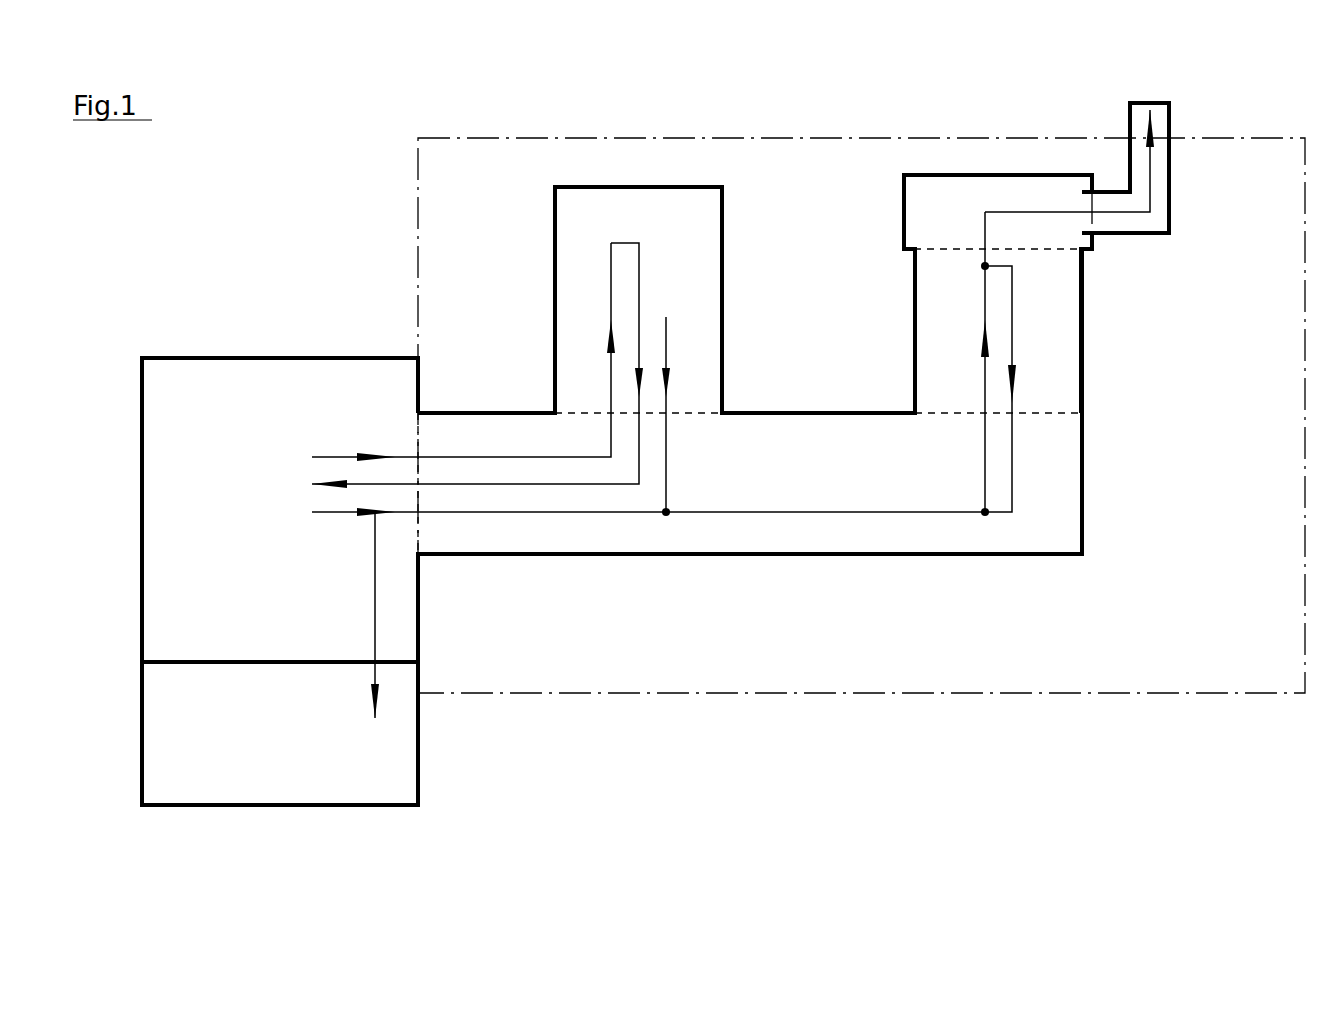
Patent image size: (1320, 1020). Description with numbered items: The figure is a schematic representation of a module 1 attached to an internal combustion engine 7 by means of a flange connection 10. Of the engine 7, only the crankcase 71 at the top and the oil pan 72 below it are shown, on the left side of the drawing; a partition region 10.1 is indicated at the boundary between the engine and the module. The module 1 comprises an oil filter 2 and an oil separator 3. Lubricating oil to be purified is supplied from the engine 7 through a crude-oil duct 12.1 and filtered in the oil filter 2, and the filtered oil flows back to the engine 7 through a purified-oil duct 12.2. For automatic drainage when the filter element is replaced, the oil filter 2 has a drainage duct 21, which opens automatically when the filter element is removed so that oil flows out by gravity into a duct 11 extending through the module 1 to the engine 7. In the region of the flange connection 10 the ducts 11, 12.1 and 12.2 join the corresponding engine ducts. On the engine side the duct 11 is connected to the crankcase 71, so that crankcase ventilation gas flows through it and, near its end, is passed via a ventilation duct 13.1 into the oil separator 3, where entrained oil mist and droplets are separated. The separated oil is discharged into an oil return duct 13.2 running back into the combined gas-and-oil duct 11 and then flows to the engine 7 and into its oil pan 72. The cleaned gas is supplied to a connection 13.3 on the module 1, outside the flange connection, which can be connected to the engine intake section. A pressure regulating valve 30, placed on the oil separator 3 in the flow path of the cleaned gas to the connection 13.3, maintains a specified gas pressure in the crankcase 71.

The module 1 is at (418, 263).
The oil filter 2 is at (638, 301).
The oil separator 3 is at (1081, 313).
The internal combustion engine 7 is at (238, 581).
The flange connection 10 is at (421, 558).
The partition wall 10.1 is at (532, 335).
The duct 11 is at (753, 515).
The crude-oil duct 12.1 is at (472, 457).
The purified-oil duct 12.2 is at (526, 487).
The ventilation duct 13.1 is at (983, 441).
The oil return duct 13.2 is at (1013, 435).
The connection 13.3 is at (1150, 170).
The drainage duct 21 is at (668, 458).
The pressure regulating valve 30 is at (1036, 259).
The crankcase 71 is at (280, 510).
The oil pan 72 is at (280, 679).